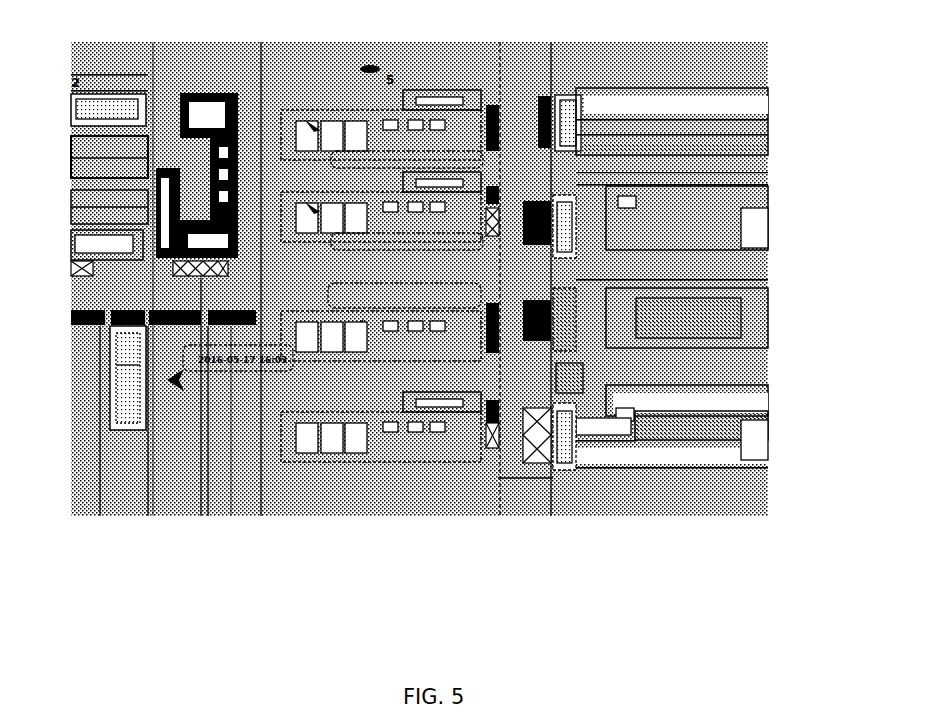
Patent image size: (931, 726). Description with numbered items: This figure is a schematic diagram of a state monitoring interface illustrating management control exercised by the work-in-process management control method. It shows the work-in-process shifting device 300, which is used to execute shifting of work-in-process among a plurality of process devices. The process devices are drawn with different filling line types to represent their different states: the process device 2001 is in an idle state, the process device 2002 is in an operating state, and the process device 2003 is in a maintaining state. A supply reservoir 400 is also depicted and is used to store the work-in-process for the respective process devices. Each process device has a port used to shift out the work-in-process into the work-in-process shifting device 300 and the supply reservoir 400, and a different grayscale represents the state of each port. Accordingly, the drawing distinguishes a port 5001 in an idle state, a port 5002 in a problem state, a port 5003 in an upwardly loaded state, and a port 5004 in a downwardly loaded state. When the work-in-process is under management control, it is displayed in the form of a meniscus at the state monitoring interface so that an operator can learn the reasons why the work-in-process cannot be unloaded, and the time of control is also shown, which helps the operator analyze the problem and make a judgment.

The work-in-process shifting device 300 is at (387, 46).
The process device in an idle state 2001 is at (268, 150).
The process device in an operating state 2002 is at (155, 510).
The process device in a maintaining state 2003 is at (203, 118).
The supply reservoir 400 is at (70, 284).
The port in an idle state 5001 is at (538, 138).
The port in a problem state 5002 is at (543, 197).
The port in an upwardly loaded state 5003 is at (522, 328).
The port in a downwardly loaded state 5004 is at (474, 444).